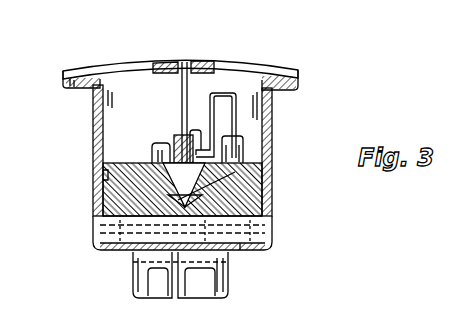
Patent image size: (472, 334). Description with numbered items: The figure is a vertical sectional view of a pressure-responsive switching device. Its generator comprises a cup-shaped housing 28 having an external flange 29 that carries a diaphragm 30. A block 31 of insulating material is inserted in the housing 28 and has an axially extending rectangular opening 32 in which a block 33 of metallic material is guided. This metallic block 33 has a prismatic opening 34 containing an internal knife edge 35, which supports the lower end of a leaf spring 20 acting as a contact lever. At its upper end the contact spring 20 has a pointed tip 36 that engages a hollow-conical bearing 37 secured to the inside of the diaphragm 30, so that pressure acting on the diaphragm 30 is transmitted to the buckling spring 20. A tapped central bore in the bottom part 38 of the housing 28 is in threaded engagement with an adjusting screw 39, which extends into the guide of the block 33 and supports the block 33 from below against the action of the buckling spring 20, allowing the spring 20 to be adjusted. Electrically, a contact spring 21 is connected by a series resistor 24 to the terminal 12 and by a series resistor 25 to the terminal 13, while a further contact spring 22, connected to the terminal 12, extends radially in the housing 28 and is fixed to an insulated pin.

The terminal 12 is at (228, 288).
The terminal 13 is at (152, 153).
The leaf spring 20 is at (181, 88).
The contact spring 21 is at (236, 120).
The contact spring 22 is at (177, 140).
The series resistor 24 is at (150, 222).
The series resistor 25 is at (100, 194).
The cup-shaped housing 28 is at (93, 149).
The external flange 29 is at (88, 82).
The diaphragm 30 is at (104, 66).
The block of insulating material 31 is at (252, 194).
The rectangular opening 32 is at (103, 180).
The block of metallic material 33 is at (160, 218).
The prismatic opening 34 is at (233, 173).
The internal knife edge 35 is at (178, 198).
The pointed tip 36 is at (192, 60).
The hollow-conical bearing 37 is at (168, 63).
The bottom part 38 is at (270, 250).
The adjusting screw 39 is at (160, 256).